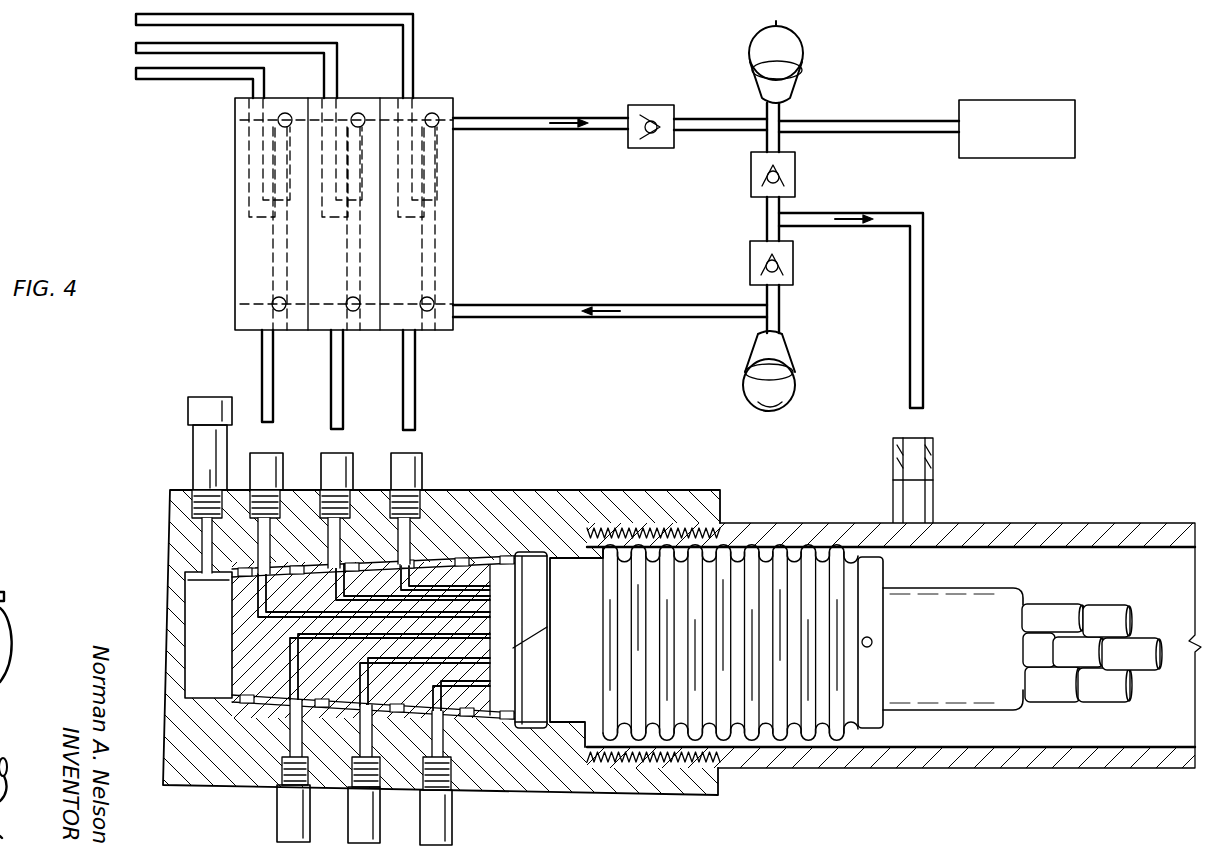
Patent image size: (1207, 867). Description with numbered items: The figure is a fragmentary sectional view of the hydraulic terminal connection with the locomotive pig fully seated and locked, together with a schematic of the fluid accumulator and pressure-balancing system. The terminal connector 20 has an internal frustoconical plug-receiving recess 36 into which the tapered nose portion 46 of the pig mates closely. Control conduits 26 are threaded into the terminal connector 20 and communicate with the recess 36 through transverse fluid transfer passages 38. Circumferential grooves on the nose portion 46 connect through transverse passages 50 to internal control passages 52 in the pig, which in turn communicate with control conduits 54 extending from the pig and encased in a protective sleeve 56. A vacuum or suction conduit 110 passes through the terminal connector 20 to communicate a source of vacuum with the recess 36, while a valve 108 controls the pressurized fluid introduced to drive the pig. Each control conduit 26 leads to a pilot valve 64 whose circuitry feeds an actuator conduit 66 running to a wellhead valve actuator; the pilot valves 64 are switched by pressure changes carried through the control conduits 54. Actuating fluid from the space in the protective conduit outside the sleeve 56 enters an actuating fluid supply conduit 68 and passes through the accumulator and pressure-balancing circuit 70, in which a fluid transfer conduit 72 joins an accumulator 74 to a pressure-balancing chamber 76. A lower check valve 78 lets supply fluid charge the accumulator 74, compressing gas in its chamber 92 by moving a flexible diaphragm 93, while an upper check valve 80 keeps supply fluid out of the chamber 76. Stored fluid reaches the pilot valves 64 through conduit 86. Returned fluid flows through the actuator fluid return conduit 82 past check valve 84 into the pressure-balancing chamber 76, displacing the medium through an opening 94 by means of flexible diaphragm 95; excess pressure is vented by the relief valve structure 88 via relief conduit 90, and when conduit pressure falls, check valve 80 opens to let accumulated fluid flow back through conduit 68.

The terminal connector 20 is at (610, 497).
The control conduits 26 is at (345, 466).
The plug-receiving recess 36 is at (221, 582).
The transverse fluid transfer passages 38 is at (473, 586).
The tapered nose portion 46 is at (243, 660).
The transverse passages 50 is at (268, 598).
The internal control passages 52 is at (531, 554).
The control conduits 54 is at (1110, 612).
The protective sleeve 56 is at (988, 596).
The pilot valve 64 is at (452, 110).
The actuator conduit 66 is at (413, 66).
The actuating fluid supply conduit 68 is at (892, 214).
The accumulator and pressure-balancing circuit 70 is at (836, 112).
The fluid transfer conduit 72 is at (766, 220).
The accumulator 74 is at (791, 356).
The pressure-balancing chamber 76 is at (800, 62).
The check valve 78 is at (748, 264).
The check valve 80 is at (750, 174).
The actuator fluid return conduit 82 is at (528, 118).
The check valve 84 is at (650, 104).
The conduit 86 is at (637, 320).
The relief valve structure 88 is at (1017, 129).
The relief conduit 90 is at (881, 135).
The chamber 92 is at (790, 402).
The flexible diaphragm 93 is at (762, 372).
The opening 94 is at (778, 28).
The flexible diaphragm 95 is at (765, 78).
The valve 108 is at (193, 459).
The vacuum or suction conduit 110 is at (186, 411).